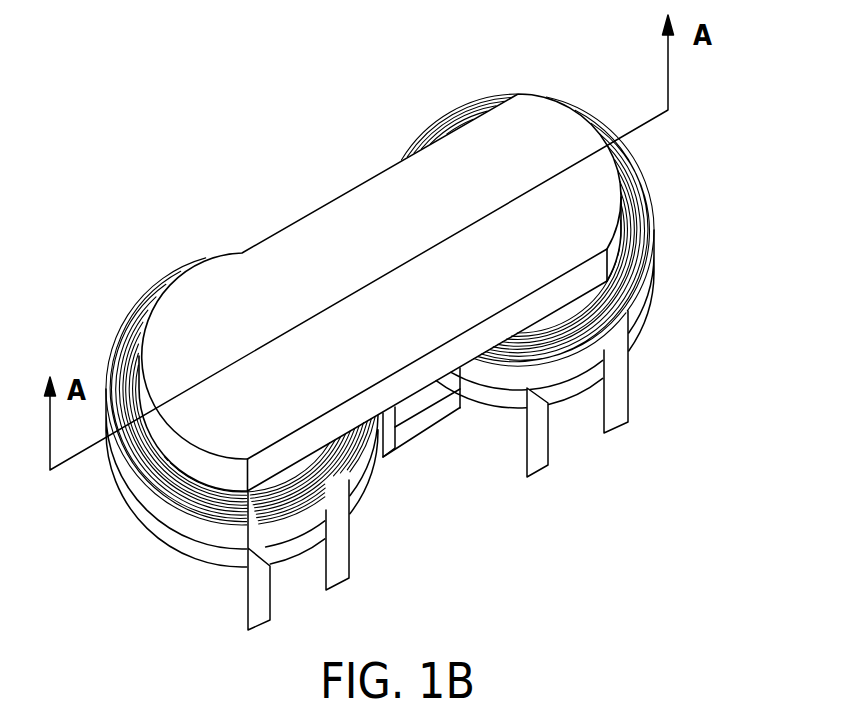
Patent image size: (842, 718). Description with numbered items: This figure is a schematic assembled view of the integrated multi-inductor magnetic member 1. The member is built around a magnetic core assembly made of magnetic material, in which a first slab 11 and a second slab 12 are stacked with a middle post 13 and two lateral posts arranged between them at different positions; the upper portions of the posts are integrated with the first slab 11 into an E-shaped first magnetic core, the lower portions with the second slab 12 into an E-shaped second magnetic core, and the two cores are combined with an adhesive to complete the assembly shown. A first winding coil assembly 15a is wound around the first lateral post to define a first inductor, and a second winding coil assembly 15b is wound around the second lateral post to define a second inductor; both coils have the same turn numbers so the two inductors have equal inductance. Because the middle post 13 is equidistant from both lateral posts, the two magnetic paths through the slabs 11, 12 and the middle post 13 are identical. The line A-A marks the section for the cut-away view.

The integrated multi-inductor magnetic member 1 is at (447, 324).
The first slab 11 is at (618, 248).
The second slab 12 is at (383, 466).
The middle post 13 is at (420, 398).
The first winding coil assembly 15a is at (159, 524).
The second winding coil assembly 15b is at (633, 334).